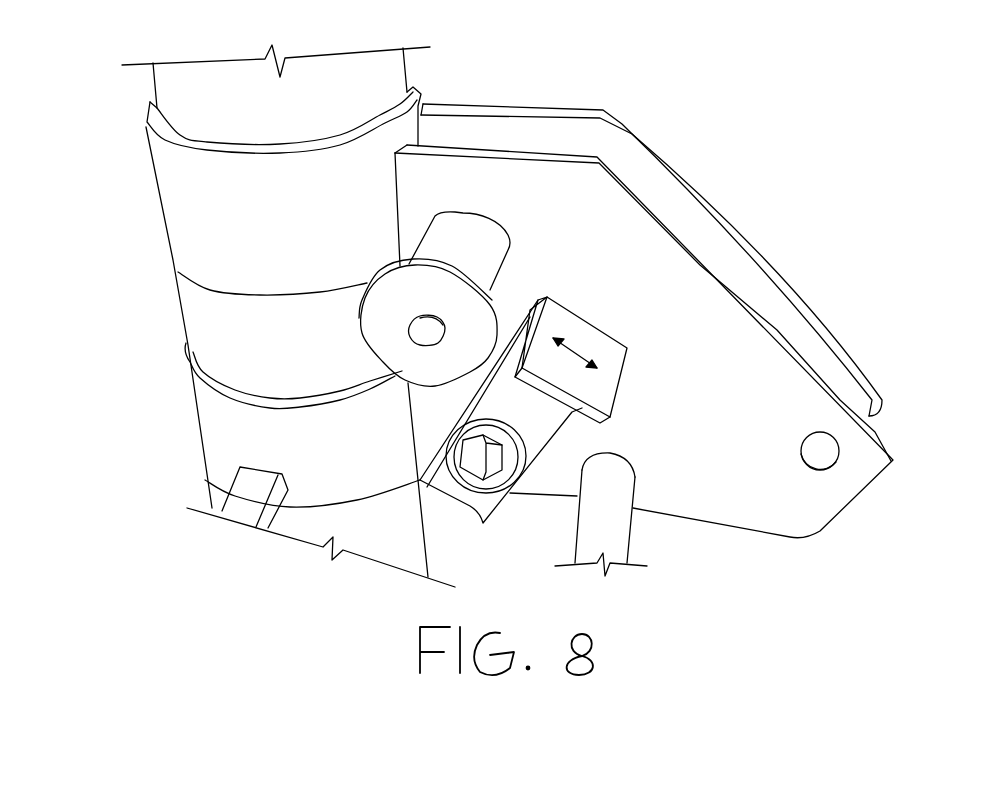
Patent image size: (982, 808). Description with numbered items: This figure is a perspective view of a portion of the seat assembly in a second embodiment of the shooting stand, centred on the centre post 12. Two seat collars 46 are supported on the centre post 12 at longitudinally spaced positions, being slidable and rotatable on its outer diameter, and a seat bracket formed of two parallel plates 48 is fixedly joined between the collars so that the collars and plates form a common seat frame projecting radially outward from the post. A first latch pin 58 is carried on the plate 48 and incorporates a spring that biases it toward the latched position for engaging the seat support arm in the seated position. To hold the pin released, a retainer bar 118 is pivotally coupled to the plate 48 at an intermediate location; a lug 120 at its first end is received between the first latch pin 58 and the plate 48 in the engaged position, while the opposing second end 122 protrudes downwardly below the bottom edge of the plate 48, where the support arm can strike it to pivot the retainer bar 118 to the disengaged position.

The centre post 12 is at (63, 88).
The seat collar 46 is at (175, 208).
The parallel plate 48 is at (633, 250).
The first latch pin 58 is at (470, 233).
The retainer bar 118 is at (548, 422).
The lug 120 is at (607, 395).
The second end 122 is at (547, 551).